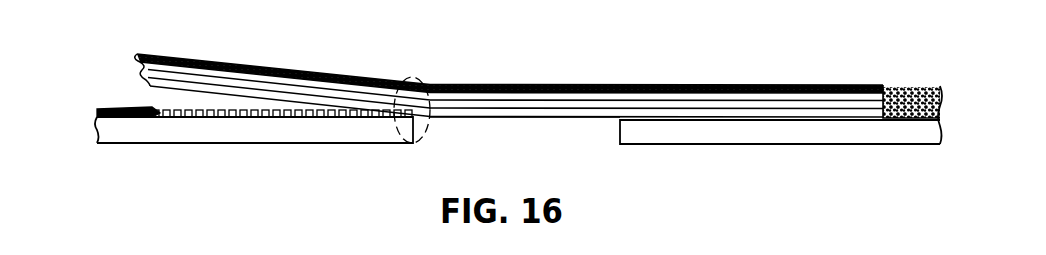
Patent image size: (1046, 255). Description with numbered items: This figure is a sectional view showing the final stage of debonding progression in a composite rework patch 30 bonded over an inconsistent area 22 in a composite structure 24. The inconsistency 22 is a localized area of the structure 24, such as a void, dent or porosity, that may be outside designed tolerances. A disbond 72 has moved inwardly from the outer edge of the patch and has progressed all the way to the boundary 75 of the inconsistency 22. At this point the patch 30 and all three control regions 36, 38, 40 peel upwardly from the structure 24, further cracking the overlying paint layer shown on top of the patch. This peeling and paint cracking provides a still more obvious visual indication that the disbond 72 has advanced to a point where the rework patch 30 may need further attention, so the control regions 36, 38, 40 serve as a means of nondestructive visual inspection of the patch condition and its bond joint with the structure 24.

The inconsistent area 22 is at (466, 138).
The composite structure 24 is at (131, 129).
The composite rework patch 30 is at (627, 70).
The first control region 36 is at (410, 77).
The second control region 38 is at (515, 62).
The third control region 40 is at (516, 66).
The disbond 72 is at (176, 99).
The boundary of the inconsistency 75 is at (415, 74).